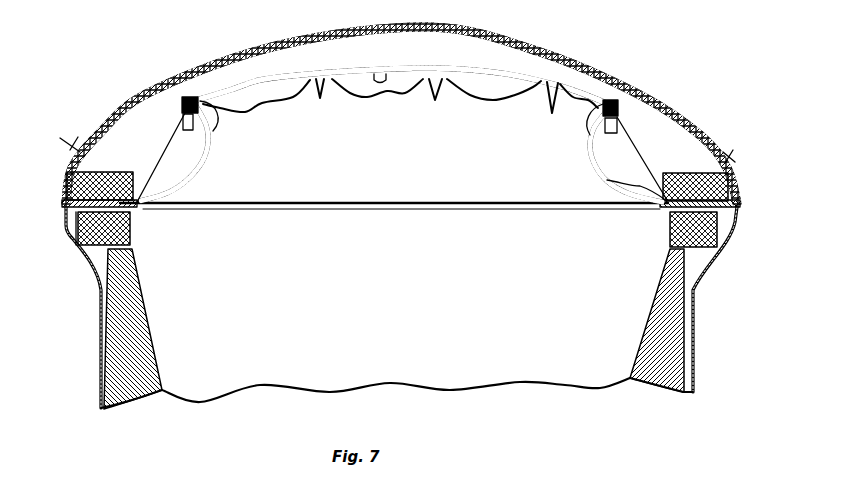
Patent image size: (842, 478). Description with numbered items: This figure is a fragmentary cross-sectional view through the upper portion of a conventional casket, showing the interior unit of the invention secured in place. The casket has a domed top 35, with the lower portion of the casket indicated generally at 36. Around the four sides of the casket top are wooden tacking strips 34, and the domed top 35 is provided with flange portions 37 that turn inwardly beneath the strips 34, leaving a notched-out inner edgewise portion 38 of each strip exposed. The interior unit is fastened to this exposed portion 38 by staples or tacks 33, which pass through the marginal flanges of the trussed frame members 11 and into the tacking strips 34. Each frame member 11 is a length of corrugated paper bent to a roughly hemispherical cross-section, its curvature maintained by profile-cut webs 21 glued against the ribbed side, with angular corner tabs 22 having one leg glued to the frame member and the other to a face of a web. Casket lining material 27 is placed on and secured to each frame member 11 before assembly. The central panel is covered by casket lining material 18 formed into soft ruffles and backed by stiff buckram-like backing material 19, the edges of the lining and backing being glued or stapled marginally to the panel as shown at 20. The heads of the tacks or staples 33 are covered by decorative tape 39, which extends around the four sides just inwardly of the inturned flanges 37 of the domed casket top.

The frame member 11 is at (207, 165).
The casket lining material 18 is at (368, 99).
The backing material 19 is at (387, 74).
The marginal securement of lining and backing 20 is at (190, 97).
The web 21 is at (173, 146).
The angular corner tab 22 is at (619, 116).
The casket lining material 27 is at (213, 142).
The staples or tacks 33 is at (115, 176).
The wooden tacking strip 34 is at (732, 147).
The domed top 35 is at (610, 72).
The lower portion of the casket 36 is at (699, 351).
The flange portion 37 is at (64, 207).
The notched-out inner edgewise portion 38 is at (607, 185).
The decorative tape 39 is at (133, 206).